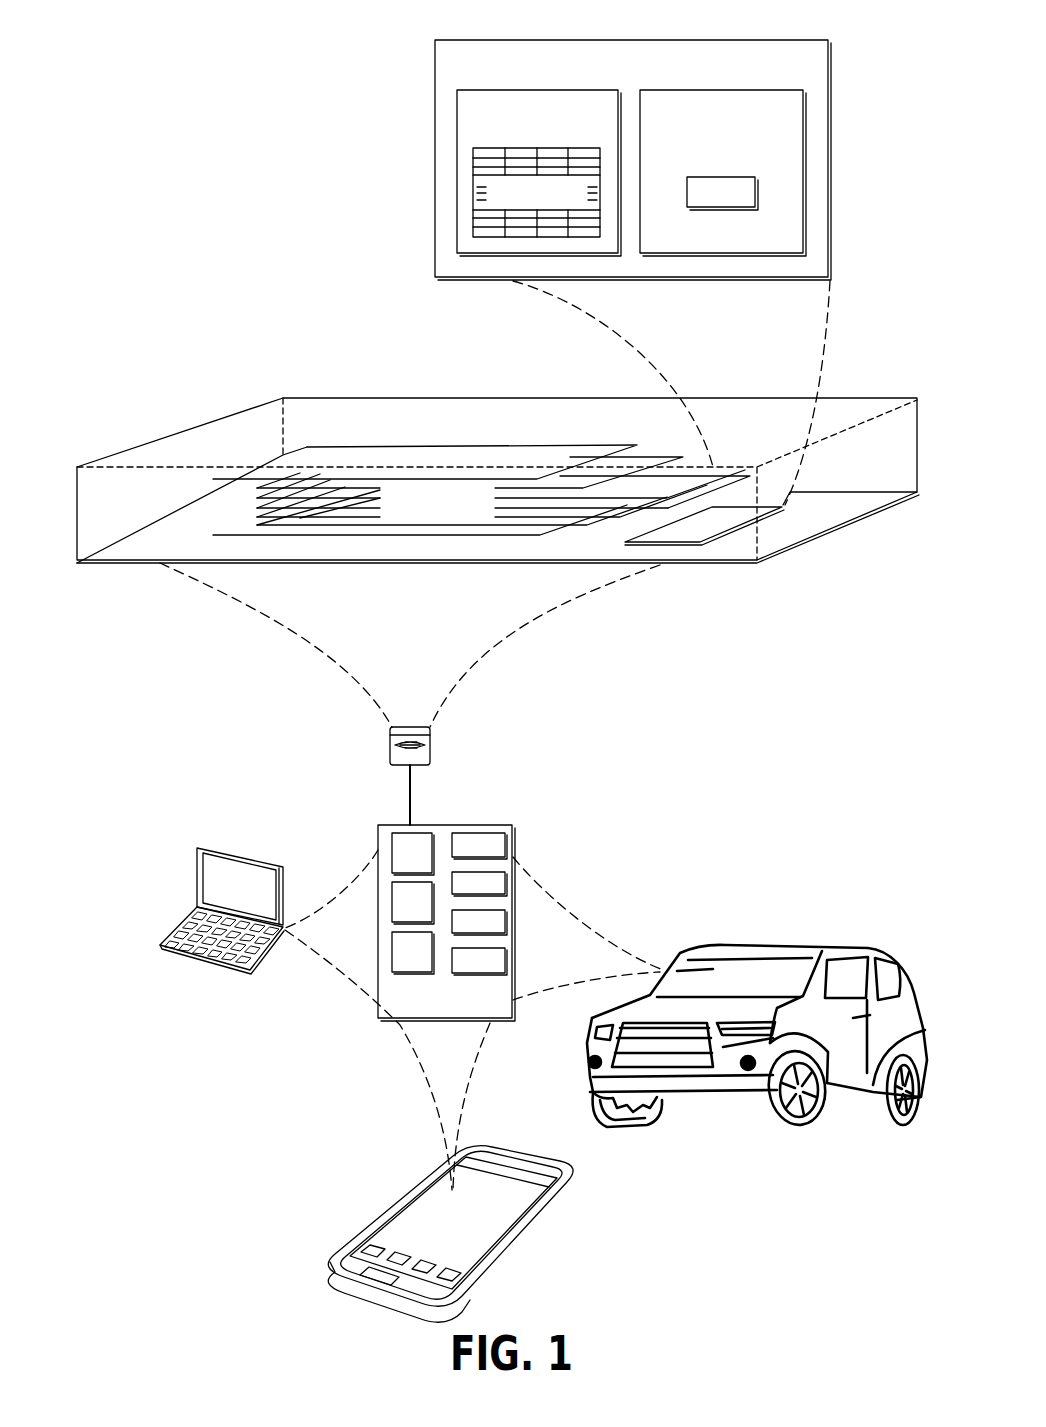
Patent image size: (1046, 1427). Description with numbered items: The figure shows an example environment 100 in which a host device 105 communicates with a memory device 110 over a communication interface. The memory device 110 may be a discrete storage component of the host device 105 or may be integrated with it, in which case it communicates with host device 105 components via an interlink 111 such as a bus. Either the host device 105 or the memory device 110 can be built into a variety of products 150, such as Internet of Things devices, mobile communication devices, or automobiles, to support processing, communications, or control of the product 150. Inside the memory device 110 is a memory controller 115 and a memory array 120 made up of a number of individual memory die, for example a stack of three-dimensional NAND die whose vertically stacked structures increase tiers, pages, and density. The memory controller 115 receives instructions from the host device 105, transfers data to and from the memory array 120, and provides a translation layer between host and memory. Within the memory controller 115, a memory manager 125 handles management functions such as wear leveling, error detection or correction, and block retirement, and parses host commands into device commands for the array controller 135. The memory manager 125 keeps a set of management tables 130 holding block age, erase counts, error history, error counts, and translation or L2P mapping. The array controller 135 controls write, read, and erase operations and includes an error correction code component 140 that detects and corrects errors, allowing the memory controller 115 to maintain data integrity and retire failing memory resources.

The environment 100 is at (829, 21).
The host device 105 is at (378, 840).
The memory device 110 is at (498, 576).
The interlink 111 is at (410, 800).
The memory controller 115 is at (436, 44).
The memory array 120 is at (497, 445).
The memory manager 125 is at (457, 128).
The management tables 130 is at (474, 192).
The array controller 135 is at (803, 128).
The error correction code (ECC) component 140 is at (757, 197).
The products 150 is at (200, 850).